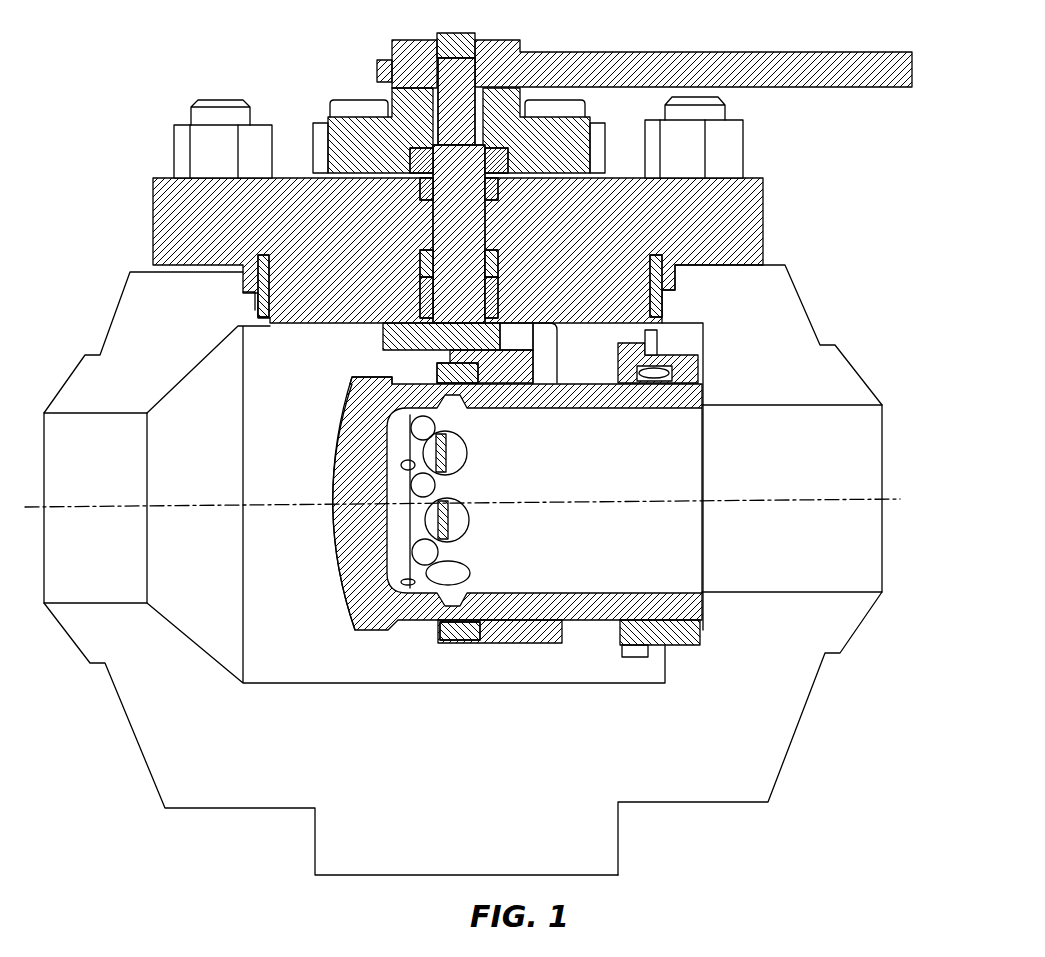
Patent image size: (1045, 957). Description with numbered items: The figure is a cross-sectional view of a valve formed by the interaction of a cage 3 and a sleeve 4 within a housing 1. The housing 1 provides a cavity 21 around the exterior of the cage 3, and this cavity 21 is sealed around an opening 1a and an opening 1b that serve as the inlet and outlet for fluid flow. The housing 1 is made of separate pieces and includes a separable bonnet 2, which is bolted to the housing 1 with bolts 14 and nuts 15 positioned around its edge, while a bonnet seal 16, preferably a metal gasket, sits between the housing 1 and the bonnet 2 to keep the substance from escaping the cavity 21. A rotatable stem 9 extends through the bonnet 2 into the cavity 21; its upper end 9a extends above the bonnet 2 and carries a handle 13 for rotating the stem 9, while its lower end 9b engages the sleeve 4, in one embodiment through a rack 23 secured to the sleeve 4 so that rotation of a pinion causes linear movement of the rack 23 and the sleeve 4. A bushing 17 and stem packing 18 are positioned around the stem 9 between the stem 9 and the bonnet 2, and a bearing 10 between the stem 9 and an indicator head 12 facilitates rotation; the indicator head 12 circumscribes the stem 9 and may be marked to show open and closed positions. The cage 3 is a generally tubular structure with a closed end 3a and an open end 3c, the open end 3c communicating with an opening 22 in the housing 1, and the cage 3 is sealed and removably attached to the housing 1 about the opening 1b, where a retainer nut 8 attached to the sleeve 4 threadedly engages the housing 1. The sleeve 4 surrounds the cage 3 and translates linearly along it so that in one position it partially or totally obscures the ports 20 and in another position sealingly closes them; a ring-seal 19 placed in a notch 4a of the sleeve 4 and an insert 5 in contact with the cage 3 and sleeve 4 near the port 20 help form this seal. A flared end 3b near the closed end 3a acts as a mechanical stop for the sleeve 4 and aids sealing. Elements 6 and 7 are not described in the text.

The housing 1 is at (815, 318).
The opening 1a is at (80, 366).
The opening 1b is at (868, 540).
The bonnet 2 is at (752, 213).
The cage 3 is at (572, 388).
The closed end 3a is at (340, 495).
The flared end 3b is at (345, 380).
The open end 3c is at (822, 708).
The sleeve 4 is at (510, 375).
The notch 4a is at (560, 362).
The insert 5 is at (465, 390).
The bearing bracket 6 is at (690, 362).
The bearing 7 is at (642, 385).
The retainer nut 8 is at (635, 637).
The stem 9 is at (405, 62).
The upper end 9a is at (455, 35).
The lower end 9b is at (470, 300).
The bearing 10 is at (497, 160).
The indicator head 12 is at (577, 140).
The handle 13 is at (852, 68).
The bolts 14 is at (227, 117).
The nuts 15 is at (200, 160).
The bonnet seal 16 is at (268, 272).
The bushing 17 is at (425, 185).
The stem packing 18 is at (420, 255).
The ring-seal 19 is at (545, 640).
The port 20 is at (450, 450).
The cavity 21 is at (253, 478).
The opening 22 is at (780, 505).
The rack 23 is at (390, 333).